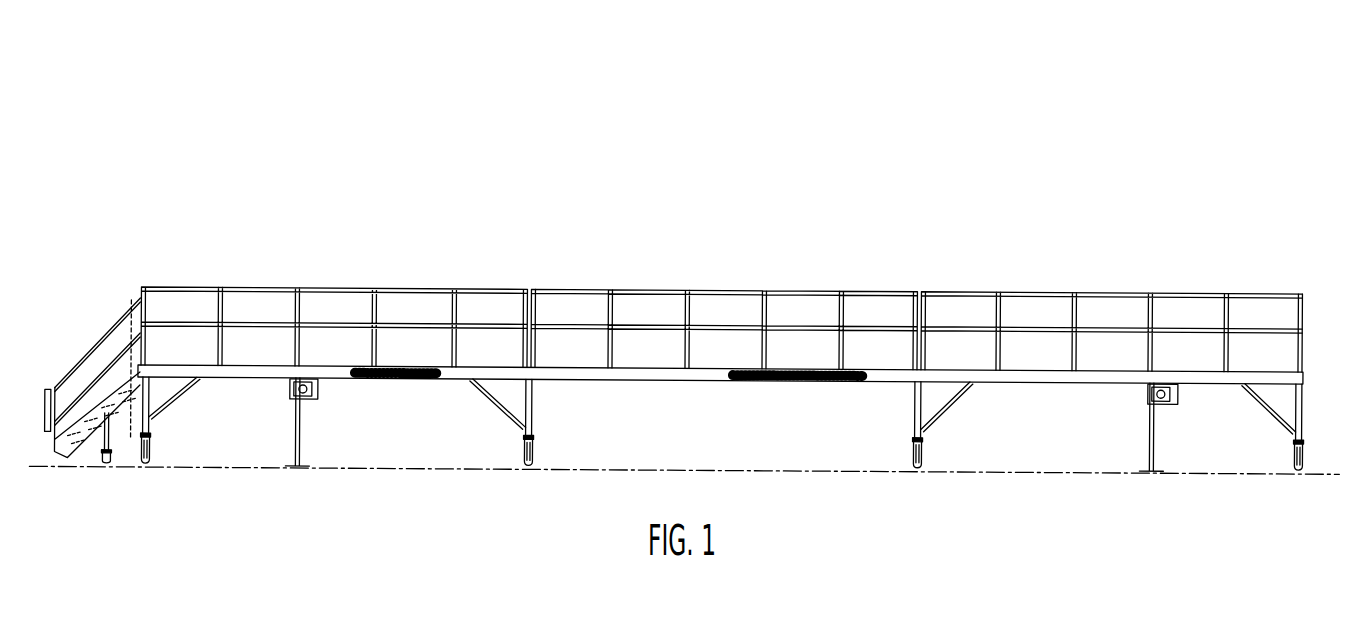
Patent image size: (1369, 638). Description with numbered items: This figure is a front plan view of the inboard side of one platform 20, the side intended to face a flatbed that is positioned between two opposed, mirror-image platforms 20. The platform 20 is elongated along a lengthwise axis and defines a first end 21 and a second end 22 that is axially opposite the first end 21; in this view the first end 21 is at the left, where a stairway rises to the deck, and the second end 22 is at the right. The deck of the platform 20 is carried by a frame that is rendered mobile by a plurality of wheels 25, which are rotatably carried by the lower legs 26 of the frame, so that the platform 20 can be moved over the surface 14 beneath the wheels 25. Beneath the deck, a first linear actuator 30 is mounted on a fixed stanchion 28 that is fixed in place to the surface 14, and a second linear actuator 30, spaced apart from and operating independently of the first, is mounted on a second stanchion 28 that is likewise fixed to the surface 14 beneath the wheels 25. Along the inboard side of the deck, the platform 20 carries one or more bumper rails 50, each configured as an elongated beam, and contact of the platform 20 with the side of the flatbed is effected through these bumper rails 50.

The surface 14 is at (643, 468).
The platform 20 is at (857, 161).
The first end 21 is at (144, 247).
The second end 22 is at (1294, 258).
The wheels 25 is at (150, 463).
The lower legs 26 is at (113, 438).
The stanchion 28 is at (291, 454).
The linear actuator 30 is at (323, 413).
The bumper rail 50 is at (242, 373).